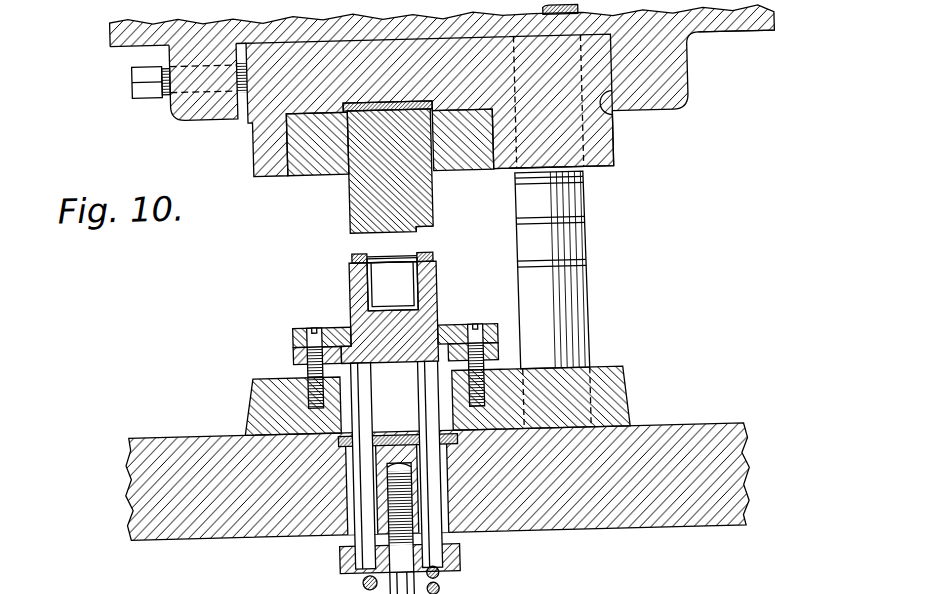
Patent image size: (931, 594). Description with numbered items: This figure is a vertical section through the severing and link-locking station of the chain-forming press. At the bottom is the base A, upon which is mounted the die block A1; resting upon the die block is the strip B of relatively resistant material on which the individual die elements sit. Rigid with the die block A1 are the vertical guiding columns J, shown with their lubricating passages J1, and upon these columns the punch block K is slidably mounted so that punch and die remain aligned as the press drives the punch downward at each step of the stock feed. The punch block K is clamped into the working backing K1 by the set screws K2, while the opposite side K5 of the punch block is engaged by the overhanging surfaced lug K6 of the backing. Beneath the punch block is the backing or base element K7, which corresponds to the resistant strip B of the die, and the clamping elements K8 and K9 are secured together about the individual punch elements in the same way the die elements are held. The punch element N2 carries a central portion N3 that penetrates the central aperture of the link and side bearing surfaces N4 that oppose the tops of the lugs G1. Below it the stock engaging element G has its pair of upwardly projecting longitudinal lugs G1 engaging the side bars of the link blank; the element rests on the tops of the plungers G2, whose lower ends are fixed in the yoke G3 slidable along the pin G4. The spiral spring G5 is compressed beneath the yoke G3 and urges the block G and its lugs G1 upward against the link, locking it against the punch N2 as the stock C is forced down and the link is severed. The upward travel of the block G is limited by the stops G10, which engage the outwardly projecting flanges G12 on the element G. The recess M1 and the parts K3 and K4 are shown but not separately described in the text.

The working backing K1 is at (119, 27).
The set screws K2 is at (144, 80).
The lug K3 is at (197, 102).
The clamping screw K4 is at (247, 112).
The opposite side of punch block K5 is at (616, 127).
The overhanging surfaced lug K6 is at (644, 82).
The backing or base element K7 is at (415, 71).
The clamping element K8 is at (315, 169).
The clamping element K9 is at (466, 170).
The punch block K is at (606, 157).
The punch element N2 is at (360, 198).
The central portion N3 is at (406, 238).
The side bearing surfaces N4 is at (355, 231).
The vertical guiding columns J is at (577, 286).
The lubricating passages J1 is at (574, 255).
The stock engaging element G is at (380, 326).
The lugs G1 is at (436, 277).
The plungers G2 is at (420, 388).
The yoke G3 is at (454, 550).
The pin G4 is at (426, 572).
The spiral spring G5 is at (433, 588).
The stops G10 is at (450, 325).
The outwardly projecting flanges G12 is at (499, 348).
The stock C is at (353, 256).
The recess M1 is at (392, 284).
The base A is at (156, 440).
The die block A1 is at (260, 398).
The strip of resistant material B is at (387, 431).